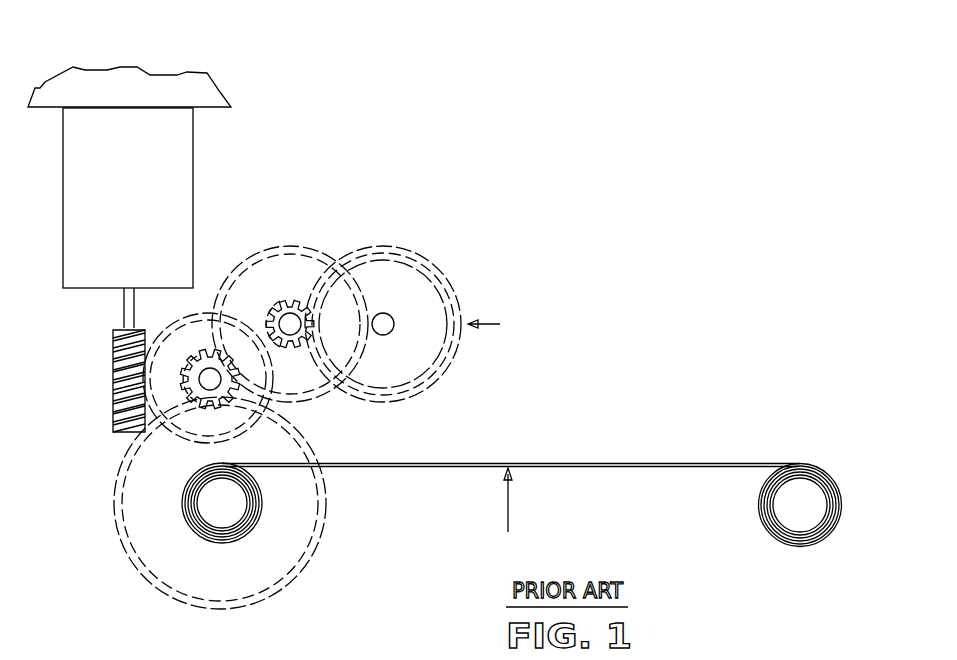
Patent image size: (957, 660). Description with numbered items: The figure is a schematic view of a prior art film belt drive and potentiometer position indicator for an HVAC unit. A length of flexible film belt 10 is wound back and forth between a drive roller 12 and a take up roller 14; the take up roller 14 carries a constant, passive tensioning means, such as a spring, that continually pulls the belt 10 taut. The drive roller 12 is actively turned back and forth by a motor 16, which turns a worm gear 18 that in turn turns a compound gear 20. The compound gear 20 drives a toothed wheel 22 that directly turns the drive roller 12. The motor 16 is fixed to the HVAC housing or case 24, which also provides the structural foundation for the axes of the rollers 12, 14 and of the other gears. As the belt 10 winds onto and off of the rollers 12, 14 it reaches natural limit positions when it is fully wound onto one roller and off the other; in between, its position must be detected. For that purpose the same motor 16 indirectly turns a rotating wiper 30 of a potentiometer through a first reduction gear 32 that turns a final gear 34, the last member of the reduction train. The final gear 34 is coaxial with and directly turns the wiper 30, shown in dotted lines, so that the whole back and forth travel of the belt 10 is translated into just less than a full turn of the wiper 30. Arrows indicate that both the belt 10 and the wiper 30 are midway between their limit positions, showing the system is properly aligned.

The film belt 10 is at (597, 463).
The drive roller 12 is at (195, 532).
The take up roller 14 is at (775, 540).
The motor 16 is at (195, 158).
The worm gear 18 is at (118, 385).
The compound gear 20 is at (200, 310).
The toothed wheel 22 is at (315, 540).
The case 24 is at (208, 75).
The wiper 30 is at (435, 285).
The first reduction gear 32 is at (288, 245).
The final gear 34 is at (410, 250).